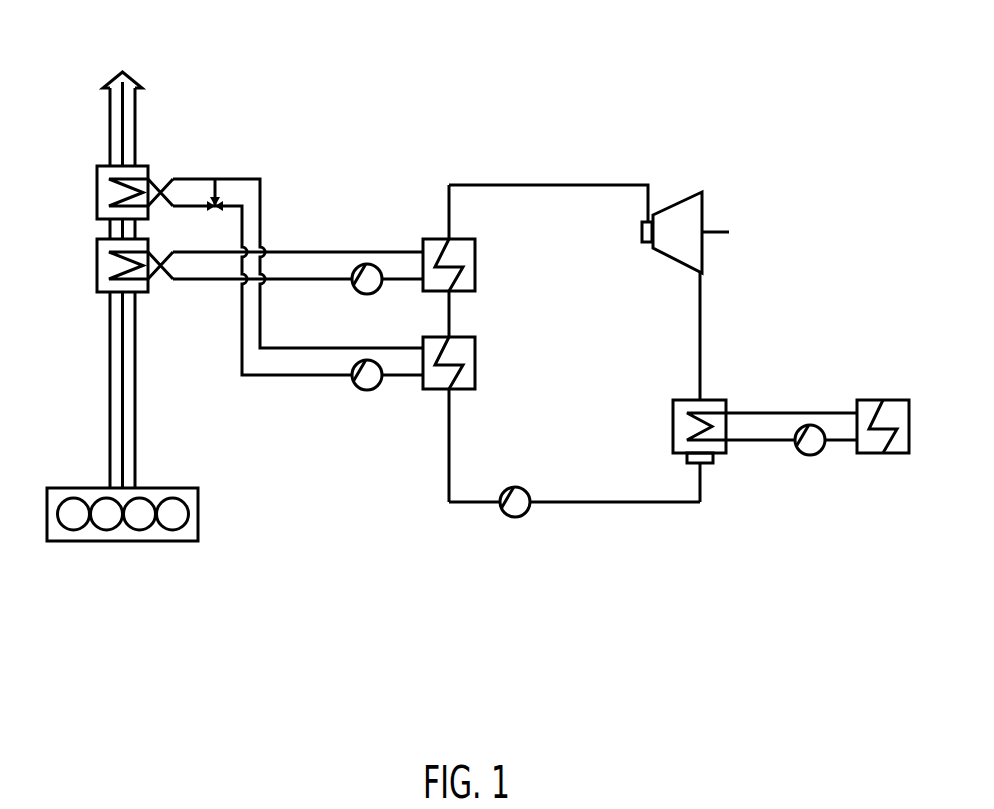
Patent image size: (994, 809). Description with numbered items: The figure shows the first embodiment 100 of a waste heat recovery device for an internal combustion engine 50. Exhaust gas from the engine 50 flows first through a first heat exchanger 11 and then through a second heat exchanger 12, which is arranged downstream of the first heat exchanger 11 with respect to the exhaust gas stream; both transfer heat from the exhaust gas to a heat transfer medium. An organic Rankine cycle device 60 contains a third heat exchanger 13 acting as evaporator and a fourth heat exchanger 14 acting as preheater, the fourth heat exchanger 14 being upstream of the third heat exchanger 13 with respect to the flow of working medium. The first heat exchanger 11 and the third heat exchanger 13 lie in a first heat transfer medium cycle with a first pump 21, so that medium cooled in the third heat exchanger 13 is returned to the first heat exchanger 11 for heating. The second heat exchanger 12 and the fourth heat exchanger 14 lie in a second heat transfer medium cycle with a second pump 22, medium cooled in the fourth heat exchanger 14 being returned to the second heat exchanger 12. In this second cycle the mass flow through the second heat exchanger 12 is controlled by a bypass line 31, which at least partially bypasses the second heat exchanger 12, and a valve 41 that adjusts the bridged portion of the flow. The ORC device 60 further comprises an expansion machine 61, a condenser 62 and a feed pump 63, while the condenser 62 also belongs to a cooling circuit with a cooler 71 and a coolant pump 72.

The first embodiment 100 is at (582, 92).
The first heat exchanger 11 is at (97, 257).
The second heat exchanger 12 is at (97, 184).
The third heat exchanger 13 is at (477, 251).
The fourth heat exchanger 14 is at (477, 350).
The first pump 21 is at (356, 290).
The second pump 22 is at (356, 387).
The bypass line 31 is at (232, 180).
The valve 41 is at (213, 198).
The internal combustion engine 50 is at (173, 541).
The organic Rankine cycle device 60 is at (608, 354).
The expansion machine 61 is at (668, 208).
The condenser 62 is at (717, 400).
The feed pump 63 is at (504, 514).
The cooler 71 is at (868, 400).
The coolant pump 72 is at (800, 451).